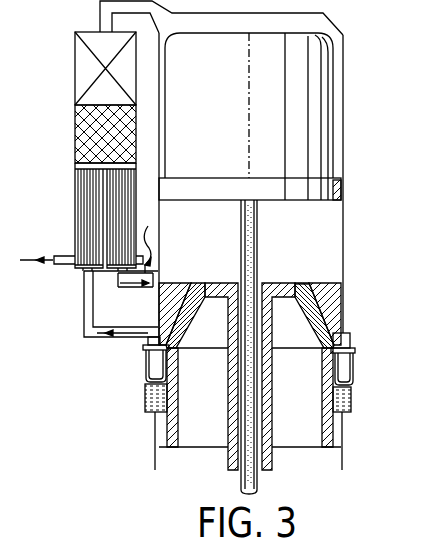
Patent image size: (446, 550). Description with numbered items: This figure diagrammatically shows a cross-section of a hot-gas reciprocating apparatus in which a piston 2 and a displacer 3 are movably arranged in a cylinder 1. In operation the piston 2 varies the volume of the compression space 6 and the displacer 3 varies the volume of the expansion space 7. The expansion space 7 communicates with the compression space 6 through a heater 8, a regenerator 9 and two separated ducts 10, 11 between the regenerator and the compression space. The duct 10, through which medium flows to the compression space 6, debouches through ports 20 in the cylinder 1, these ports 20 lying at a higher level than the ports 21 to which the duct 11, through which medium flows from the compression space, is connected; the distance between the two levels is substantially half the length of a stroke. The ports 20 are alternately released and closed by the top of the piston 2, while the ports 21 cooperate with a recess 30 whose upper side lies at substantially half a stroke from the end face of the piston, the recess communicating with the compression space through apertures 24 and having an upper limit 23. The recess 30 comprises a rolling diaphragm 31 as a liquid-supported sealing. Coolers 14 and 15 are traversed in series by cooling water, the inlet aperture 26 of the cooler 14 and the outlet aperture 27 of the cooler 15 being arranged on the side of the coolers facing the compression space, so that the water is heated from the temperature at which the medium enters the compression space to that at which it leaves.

The cylinder 1 is at (345, 135).
The piston 2 is at (325, 294).
The displacer 3 is at (301, 89).
The compression space 6 is at (313, 224).
The expansion space 7 is at (301, 25).
The heater 8 is at (88, 70).
The regenerator 9 is at (88, 134).
The duct 10 is at (120, 288).
The duct 11 is at (92, 341).
The cooler 14 is at (125, 190).
The cooler 15 is at (88, 226).
The ports 20 is at (153, 288).
The ports 21 is at (143, 339).
The upper limit of the recess 23 is at (342, 323).
The apertures 24 is at (300, 284).
The inlet aperture 26 is at (132, 272).
The outlet aperture 27 is at (57, 267).
The recess 30 is at (352, 342).
The rolling diaphragm 31 is at (352, 378).